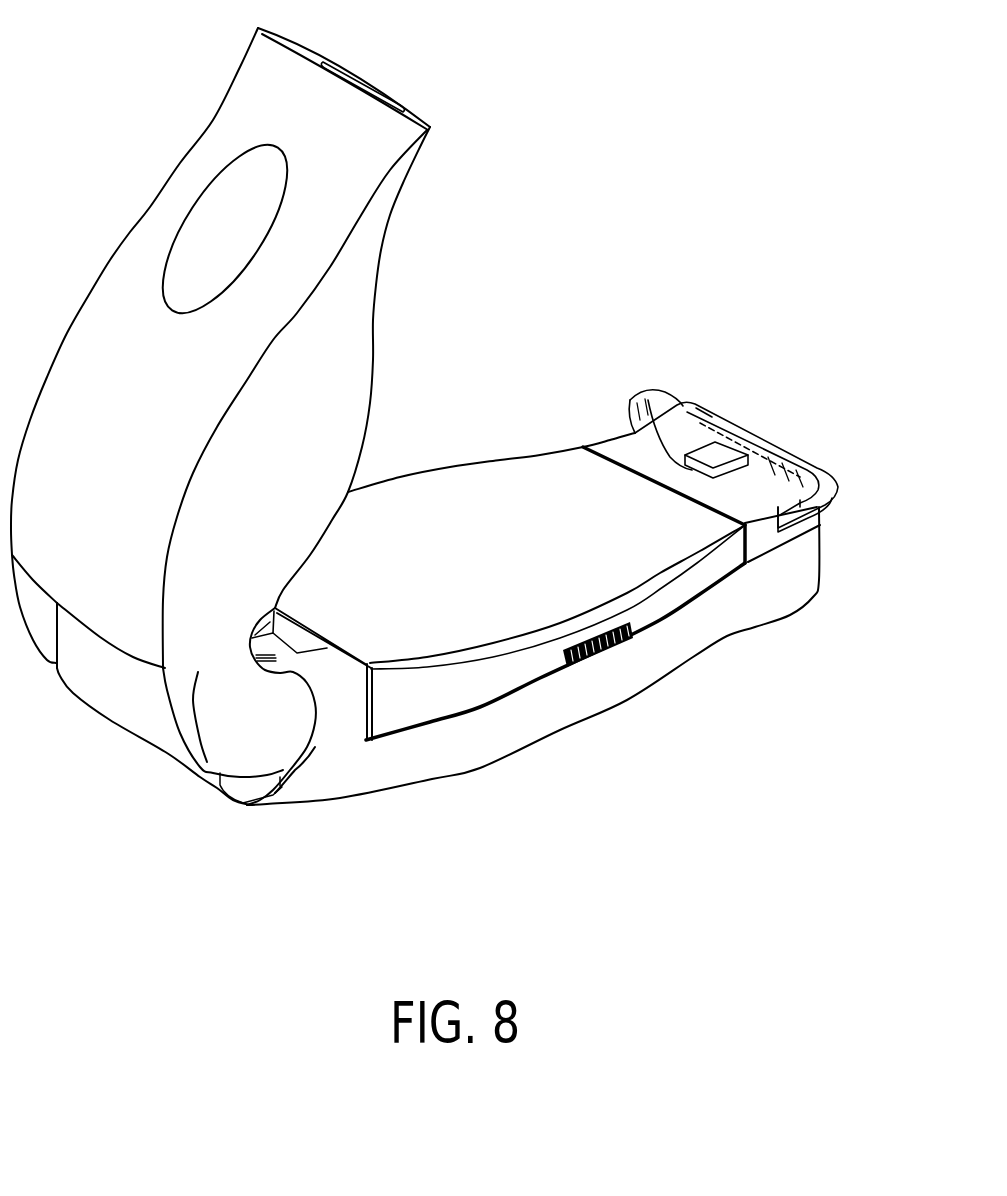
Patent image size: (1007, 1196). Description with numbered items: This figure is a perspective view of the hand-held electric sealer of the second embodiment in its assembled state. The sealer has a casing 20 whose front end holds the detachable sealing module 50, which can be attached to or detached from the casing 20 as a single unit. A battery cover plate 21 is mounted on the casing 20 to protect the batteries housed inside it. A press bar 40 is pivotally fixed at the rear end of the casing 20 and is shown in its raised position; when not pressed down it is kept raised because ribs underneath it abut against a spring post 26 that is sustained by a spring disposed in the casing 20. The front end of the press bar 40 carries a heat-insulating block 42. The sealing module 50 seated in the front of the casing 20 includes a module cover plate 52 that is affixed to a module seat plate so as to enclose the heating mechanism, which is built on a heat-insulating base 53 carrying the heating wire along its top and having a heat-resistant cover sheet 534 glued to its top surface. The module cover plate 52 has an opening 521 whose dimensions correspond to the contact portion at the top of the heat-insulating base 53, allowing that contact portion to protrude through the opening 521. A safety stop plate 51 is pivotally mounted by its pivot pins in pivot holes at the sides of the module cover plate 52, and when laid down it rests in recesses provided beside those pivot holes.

The casing 20 is at (571, 740).
The battery cover plate 21 is at (473, 482).
The spring post 26 is at (297, 653).
The press bar 40 is at (130, 287).
The heat-insulating block 42 is at (362, 82).
The sealing module 50 is at (827, 447).
The safety stop plate 51 is at (823, 492).
The module cover plate 52 is at (608, 445).
The heat-insulating base 53 is at (637, 400).
The opening 521 is at (738, 470).
The heat-resistant cover sheet 534 is at (711, 421).